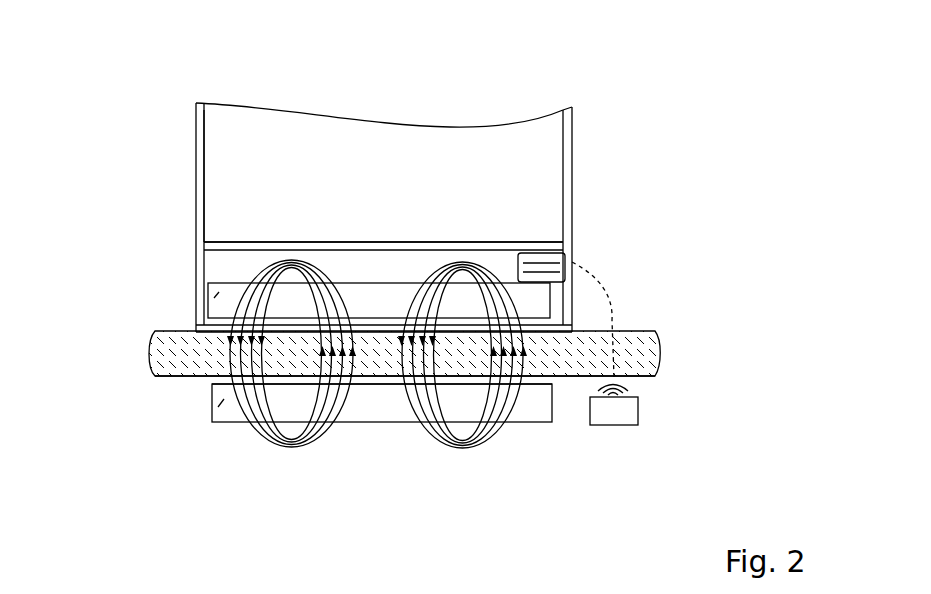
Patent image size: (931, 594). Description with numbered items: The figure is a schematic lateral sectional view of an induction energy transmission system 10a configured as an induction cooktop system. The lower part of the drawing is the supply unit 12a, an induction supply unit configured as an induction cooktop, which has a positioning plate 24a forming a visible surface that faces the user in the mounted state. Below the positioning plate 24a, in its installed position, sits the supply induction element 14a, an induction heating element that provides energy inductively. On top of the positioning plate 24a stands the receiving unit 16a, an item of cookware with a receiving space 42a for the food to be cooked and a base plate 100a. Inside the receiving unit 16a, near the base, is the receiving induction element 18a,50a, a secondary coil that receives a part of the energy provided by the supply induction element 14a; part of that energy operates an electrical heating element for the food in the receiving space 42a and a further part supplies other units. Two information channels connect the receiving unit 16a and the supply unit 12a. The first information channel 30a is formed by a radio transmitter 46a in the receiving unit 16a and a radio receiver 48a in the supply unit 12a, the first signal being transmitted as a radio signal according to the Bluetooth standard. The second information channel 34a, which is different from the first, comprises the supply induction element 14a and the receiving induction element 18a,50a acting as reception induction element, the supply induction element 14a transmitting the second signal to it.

The induction energy transmission system 10a is at (414, 288).
The supply unit 12a is at (227, 436).
The supply induction element 14a is at (538, 404).
The receiving unit 16a is at (598, 206).
The receiving induction element / reception induction element 18a,50a is at (548, 309).
The positioning plate 24a is at (160, 345).
The first information channel 30a is at (613, 308).
The second information channel 34a is at (168, 375).
The receiving space 42a is at (455, 168).
The radio transmitter 46a is at (567, 266).
The radio receiver 48a is at (627, 410).
The base plate 100a is at (327, 244).